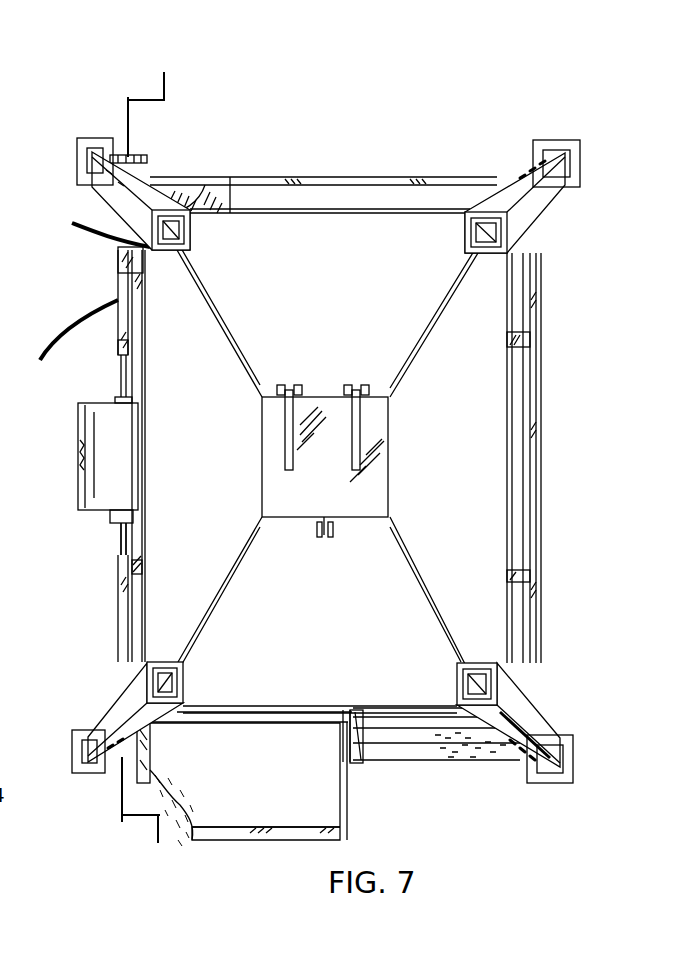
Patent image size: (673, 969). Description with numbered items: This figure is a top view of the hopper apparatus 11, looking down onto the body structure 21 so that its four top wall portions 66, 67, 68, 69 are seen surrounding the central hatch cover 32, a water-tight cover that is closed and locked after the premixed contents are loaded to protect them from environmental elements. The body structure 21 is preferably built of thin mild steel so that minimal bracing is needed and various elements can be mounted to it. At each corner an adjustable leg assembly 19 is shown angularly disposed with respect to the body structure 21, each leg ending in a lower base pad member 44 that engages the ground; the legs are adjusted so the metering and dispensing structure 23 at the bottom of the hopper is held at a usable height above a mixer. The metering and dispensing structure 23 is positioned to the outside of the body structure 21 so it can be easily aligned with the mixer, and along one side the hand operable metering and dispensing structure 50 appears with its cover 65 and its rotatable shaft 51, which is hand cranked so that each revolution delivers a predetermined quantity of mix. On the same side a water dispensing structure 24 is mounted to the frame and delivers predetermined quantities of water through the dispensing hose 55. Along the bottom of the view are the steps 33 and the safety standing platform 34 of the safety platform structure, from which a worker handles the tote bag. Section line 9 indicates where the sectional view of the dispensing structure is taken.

The section line 9- 9 is at (148, 41).
The hopper apparatus 11 is at (615, 328).
The adjustable leg assemblies 19 is at (506, 166).
The body structure 21 is at (508, 505).
The metering and dispensing structure 23 is at (96, 398).
The water dispensing structure 24 is at (200, 186).
The hatch cover 32 is at (332, 478).
The steps 33 is at (412, 752).
The standing platform 34 is at (270, 788).
The lower base pad member 44 is at (77, 166).
The metering and dispensing structure 50 is at (66, 520).
The rotatable shaft 51 is at (118, 533).
The dispensing hose 55 is at (78, 327).
The cover 65 is at (130, 478).
The top wall portion 66 is at (459, 481).
The top wall portion 67 is at (331, 315).
The top wall portion 68 is at (207, 479).
The top wall portion 69 is at (331, 635).